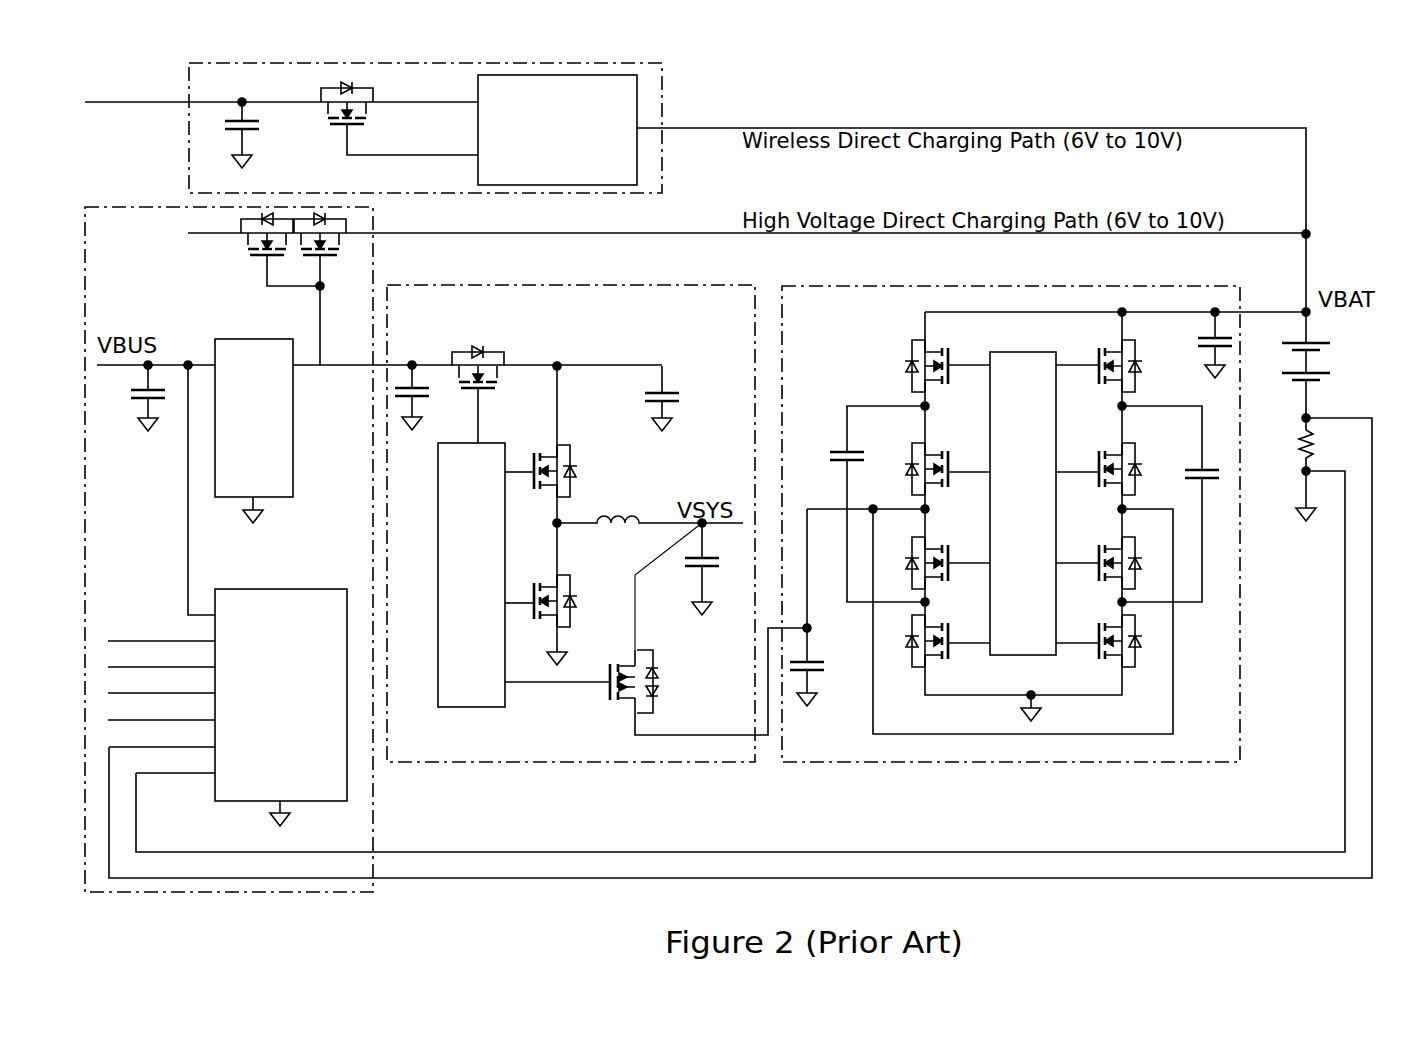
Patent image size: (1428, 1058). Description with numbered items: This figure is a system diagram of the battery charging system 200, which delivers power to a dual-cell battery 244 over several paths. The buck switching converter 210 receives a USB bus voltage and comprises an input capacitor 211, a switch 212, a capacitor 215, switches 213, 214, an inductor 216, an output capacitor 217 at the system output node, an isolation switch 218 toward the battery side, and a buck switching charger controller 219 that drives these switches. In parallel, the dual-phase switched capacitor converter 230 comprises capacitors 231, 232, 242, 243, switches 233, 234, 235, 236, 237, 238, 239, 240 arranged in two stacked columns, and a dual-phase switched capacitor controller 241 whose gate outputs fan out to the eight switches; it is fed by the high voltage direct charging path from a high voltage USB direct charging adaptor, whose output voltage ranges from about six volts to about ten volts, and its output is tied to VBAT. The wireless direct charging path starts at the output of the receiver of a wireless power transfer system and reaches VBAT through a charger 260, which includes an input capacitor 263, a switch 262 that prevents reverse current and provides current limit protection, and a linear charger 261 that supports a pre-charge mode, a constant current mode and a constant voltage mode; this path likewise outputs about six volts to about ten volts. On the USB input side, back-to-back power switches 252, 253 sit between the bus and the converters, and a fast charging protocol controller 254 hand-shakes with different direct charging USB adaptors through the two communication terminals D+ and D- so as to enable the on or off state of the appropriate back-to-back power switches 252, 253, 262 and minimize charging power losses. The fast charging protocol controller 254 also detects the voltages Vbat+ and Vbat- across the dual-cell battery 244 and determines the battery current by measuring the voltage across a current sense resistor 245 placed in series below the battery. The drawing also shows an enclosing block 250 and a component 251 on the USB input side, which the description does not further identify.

The battery charging system 200 is at (168, 88).
The buck switching converter 210 is at (470, 283).
The input capacitor 211 is at (433, 388).
The switch 212 is at (508, 358).
The switch 213 is at (580, 453).
The switch 214 is at (610, 582).
The capacitor 215 is at (665, 390).
The inductor 216 is at (610, 520).
The output capacitor 217 is at (693, 568).
The isolation switch 218 is at (665, 683).
The buck switching charger controller 219 is at (478, 715).
The dual-phase switched capacitor converter 230 is at (865, 283).
The capacitor 231 is at (817, 660).
The capacitor 232 is at (838, 445).
The switch 233 is at (960, 360).
The switch 234 is at (975, 447).
The switch 235 is at (975, 535).
The switch 236 is at (975, 620).
The switch 237 is at (1090, 358).
The switch 238 is at (1090, 465).
The switch 239 is at (1090, 555).
The switch 240 is at (1090, 635).
The dual-phase switched capacitor controller 241 is at (1030, 657).
The capacitor 242 is at (1192, 465).
The capacitor 243 is at (1193, 337).
The dual-cell battery 244 is at (1293, 393).
The current sense resistor 245 is at (1292, 458).
The USB input block 250 is at (152, 203).
The VBUS capacitor 251 is at (133, 380).
The back-to-back power switch 252 is at (255, 252).
The back-to-back power switch 253 is at (227, 332).
The fast charging protocol controller 254 is at (230, 585).
The charger 260 is at (662, 105).
The linear charger 261 is at (476, 162).
The switch 262 is at (360, 105).
The input capacitor 263 is at (253, 125).